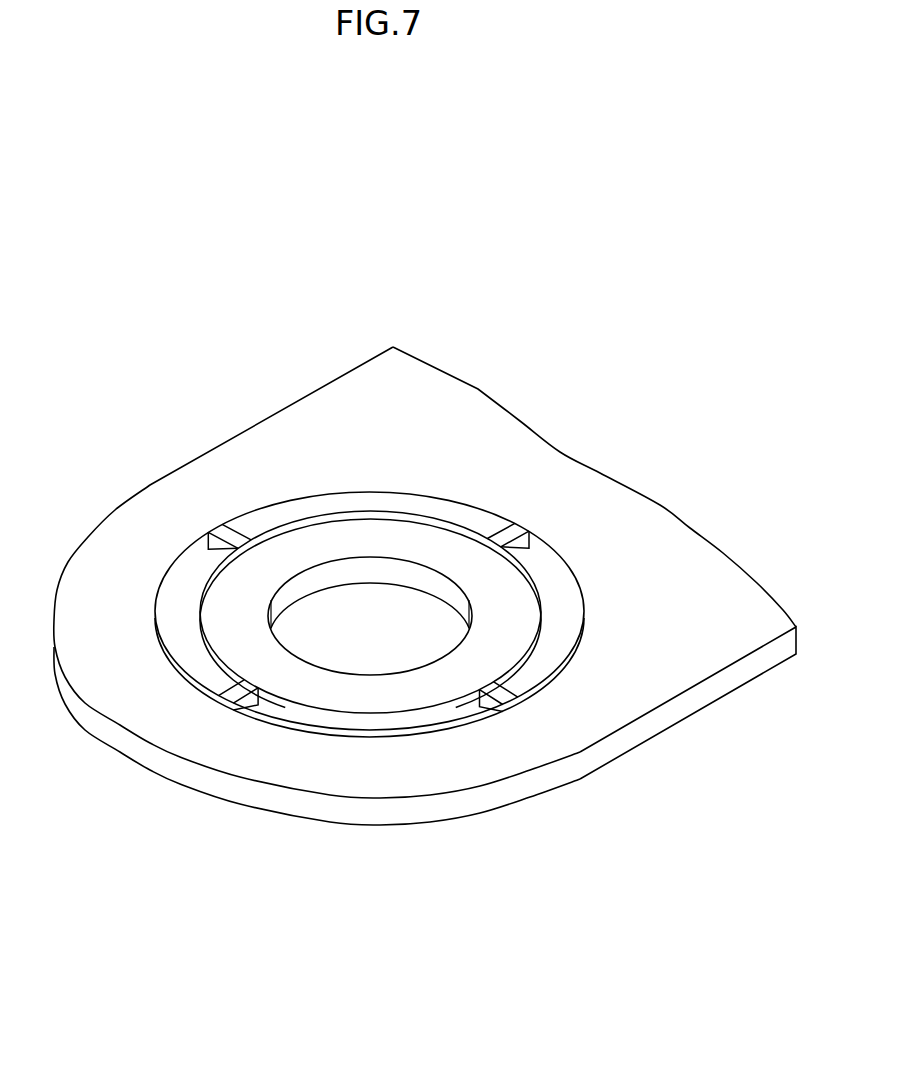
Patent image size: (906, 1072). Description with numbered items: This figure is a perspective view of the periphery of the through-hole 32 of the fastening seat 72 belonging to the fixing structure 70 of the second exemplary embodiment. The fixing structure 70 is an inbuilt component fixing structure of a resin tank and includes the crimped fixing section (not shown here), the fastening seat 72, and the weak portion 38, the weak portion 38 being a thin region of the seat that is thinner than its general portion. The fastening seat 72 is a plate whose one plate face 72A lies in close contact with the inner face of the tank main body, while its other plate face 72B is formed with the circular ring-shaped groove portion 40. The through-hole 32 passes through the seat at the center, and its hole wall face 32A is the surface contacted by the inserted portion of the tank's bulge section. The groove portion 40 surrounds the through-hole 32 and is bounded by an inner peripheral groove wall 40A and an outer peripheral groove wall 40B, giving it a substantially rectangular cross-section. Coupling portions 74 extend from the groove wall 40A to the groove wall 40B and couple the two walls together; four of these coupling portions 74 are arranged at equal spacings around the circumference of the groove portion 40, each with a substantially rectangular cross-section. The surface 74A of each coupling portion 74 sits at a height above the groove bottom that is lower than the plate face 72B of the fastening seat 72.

The fastening seat 72 is at (425, 569).
The fixing structure 70 is at (425, 569).
The plate face 72A is at (697, 714).
The plate face 72B is at (167, 512).
The groove portion 40 is at (424, 648).
The groove wall 40A is at (447, 712).
The groove wall 40B is at (436, 506).
The weak portion 38 is at (540, 572).
The coupling portion 74 is at (382, 584).
The surface 74A is at (508, 528).
The hole wall face 32A is at (370, 557).
The through-hole 32 is at (320, 574).